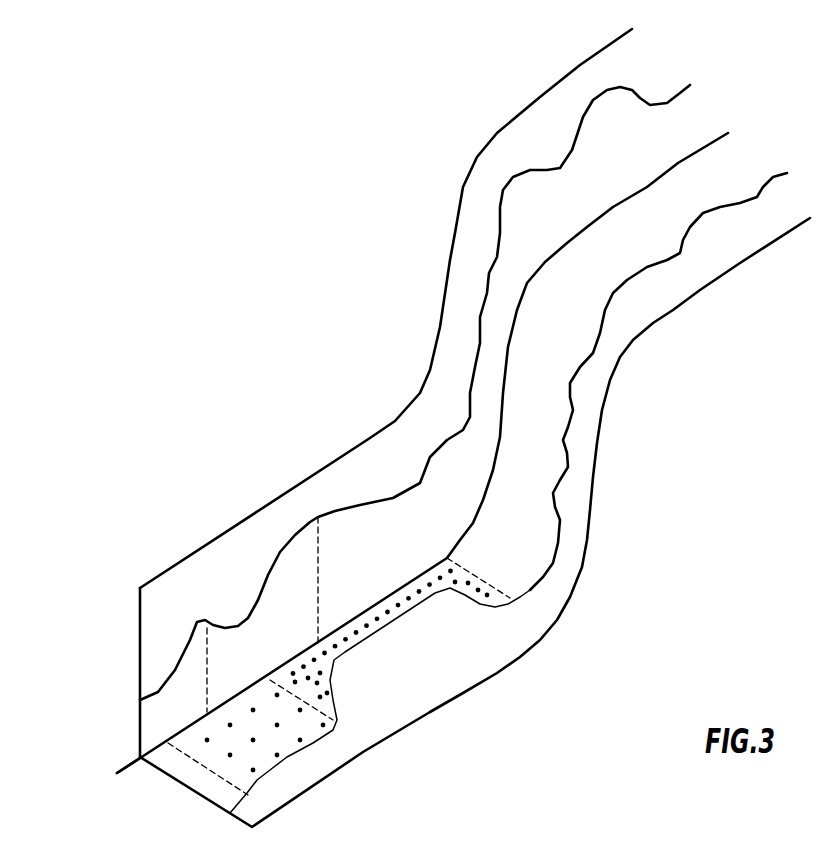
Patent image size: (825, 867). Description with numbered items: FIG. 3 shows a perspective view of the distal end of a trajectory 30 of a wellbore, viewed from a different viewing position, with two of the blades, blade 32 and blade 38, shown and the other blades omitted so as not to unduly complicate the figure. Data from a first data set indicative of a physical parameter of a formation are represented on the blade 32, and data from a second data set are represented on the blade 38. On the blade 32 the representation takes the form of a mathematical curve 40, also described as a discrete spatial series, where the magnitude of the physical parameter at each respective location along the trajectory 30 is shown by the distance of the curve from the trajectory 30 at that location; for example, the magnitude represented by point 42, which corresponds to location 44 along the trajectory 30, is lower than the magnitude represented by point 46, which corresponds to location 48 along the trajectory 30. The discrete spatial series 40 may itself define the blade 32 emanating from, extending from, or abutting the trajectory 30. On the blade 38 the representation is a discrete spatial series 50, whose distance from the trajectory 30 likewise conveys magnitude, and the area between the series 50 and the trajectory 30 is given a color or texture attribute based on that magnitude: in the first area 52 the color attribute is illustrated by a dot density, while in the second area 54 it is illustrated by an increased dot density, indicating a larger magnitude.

The trajectory 30 is at (106, 791).
The blade 32 is at (96, 672).
The blade 38 is at (283, 784).
The mathematical curve 40 is at (415, 392).
The point 42 is at (213, 641).
The location 44 is at (270, 677).
The point 46 is at (346, 556).
The location 48 is at (414, 599).
The discrete spatial series 50 is at (656, 398).
The first area 52 is at (367, 694).
The second area 54 is at (620, 467).